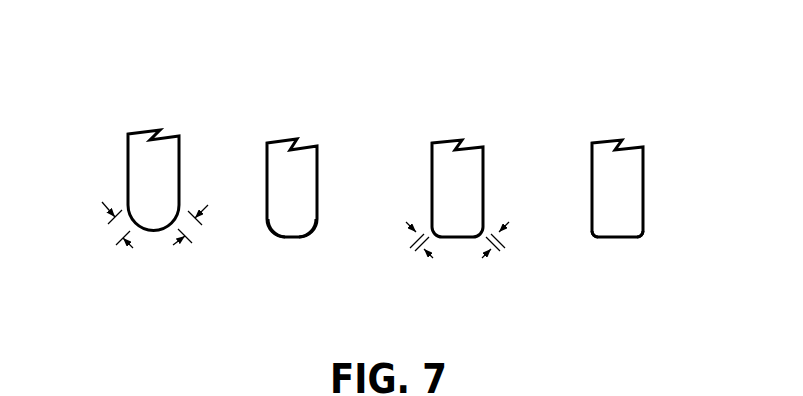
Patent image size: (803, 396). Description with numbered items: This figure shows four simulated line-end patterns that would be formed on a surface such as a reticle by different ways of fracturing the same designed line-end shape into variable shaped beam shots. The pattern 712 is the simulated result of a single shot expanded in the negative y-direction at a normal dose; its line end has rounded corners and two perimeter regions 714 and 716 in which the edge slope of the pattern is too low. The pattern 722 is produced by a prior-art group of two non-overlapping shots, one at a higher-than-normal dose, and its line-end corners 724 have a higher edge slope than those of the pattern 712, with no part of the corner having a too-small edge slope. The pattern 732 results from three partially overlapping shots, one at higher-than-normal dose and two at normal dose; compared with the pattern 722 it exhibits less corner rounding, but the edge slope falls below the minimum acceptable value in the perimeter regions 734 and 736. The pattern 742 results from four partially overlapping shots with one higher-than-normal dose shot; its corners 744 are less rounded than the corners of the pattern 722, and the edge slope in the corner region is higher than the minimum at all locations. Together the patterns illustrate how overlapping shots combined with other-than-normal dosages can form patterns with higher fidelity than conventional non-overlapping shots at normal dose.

The pattern 712 is at (128, 148).
The perimeter region 714 is at (106, 214).
The perimeter region 716 is at (199, 215).
The pattern 722 is at (267, 152).
The line-end corners 724 is at (282, 238).
The pattern 732 is at (432, 150).
The perimeter region 734 is at (408, 230).
The perimeter region 736 is at (503, 230).
The pattern 742 is at (592, 157).
The corners 744 is at (598, 238).